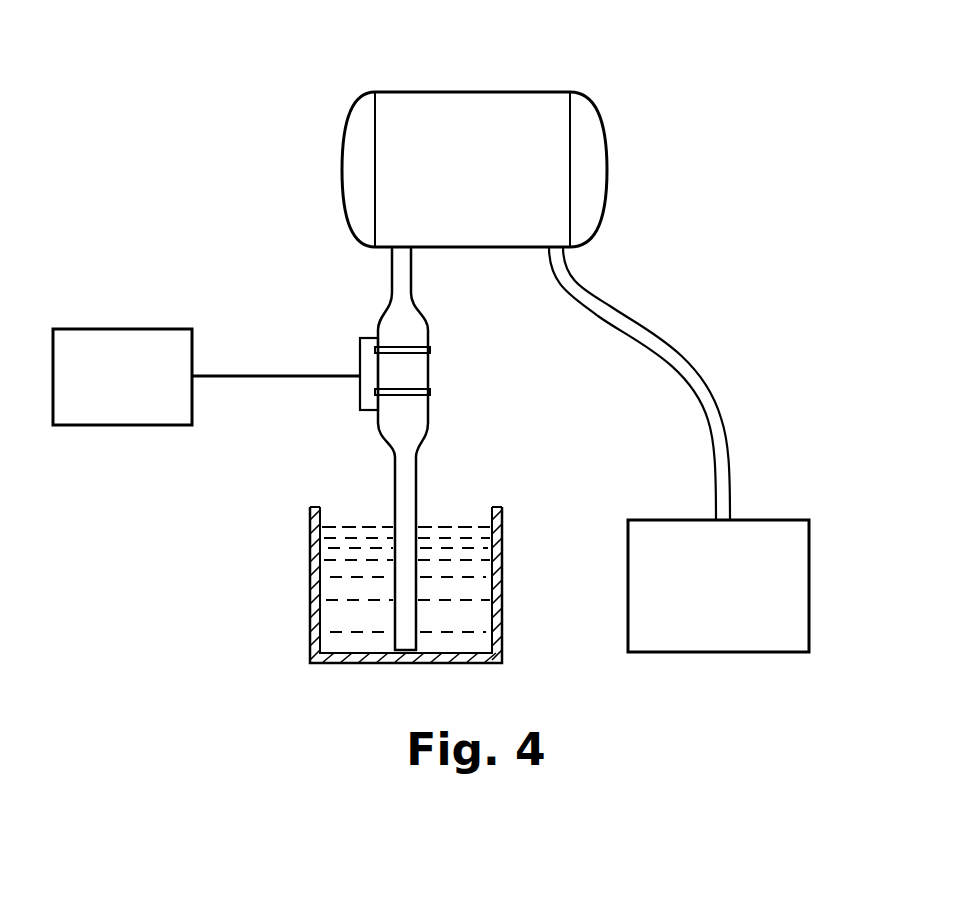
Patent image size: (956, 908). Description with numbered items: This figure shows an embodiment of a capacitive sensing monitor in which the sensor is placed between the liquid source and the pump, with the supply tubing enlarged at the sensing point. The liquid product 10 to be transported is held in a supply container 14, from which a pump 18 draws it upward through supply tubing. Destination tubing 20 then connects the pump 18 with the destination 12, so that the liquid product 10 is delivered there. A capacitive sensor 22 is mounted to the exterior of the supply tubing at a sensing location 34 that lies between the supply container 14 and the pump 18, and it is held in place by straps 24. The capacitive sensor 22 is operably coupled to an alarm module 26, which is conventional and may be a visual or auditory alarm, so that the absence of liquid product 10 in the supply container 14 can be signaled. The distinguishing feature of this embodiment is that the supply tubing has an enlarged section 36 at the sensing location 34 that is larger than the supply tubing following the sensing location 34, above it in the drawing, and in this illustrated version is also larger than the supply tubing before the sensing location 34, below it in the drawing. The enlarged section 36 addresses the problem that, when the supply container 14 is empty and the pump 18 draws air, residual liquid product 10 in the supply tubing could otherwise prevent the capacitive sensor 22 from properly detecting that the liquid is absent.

The liquid product 10 is at (470, 535).
The destination 12 is at (811, 618).
The supply container 14 is at (312, 575).
The pump 18 is at (482, 92).
The destination tubing 20 is at (682, 373).
The capacitive sensor 22 is at (360, 357).
The straps 24 is at (437, 408).
The alarm module 26 is at (118, 329).
The sensing location 34 is at (430, 371).
The enlarged section 36 is at (339, 448).